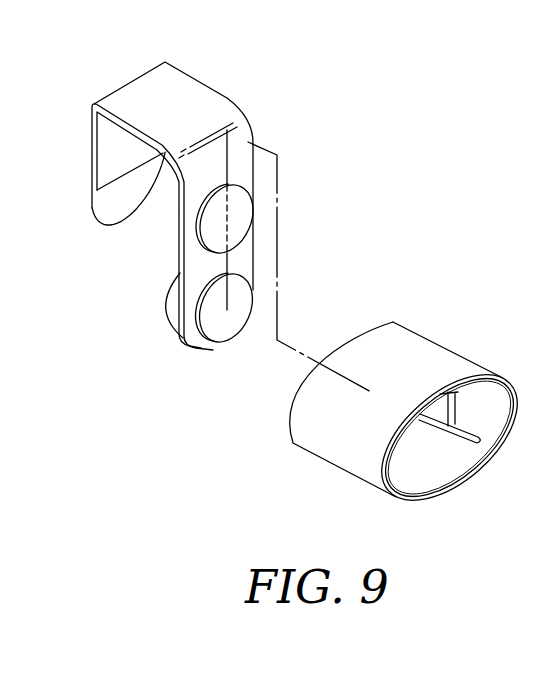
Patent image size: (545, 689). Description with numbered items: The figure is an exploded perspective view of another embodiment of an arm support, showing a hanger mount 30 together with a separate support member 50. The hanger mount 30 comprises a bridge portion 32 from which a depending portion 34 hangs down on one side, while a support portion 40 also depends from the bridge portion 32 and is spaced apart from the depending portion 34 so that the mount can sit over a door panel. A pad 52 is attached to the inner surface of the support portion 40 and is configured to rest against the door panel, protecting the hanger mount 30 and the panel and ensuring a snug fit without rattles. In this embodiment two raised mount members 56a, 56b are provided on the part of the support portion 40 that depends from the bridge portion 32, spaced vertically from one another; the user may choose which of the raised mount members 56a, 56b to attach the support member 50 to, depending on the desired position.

The hanger mount 30 is at (146, 188).
The bridge portion 32 is at (183, 90).
The depending portion 34 is at (92, 140).
The support portion 40 is at (190, 200).
The support member 50 is at (443, 325).
The pad 52 is at (172, 303).
The raised mount member 56a is at (212, 230).
The raised mount member 56b is at (215, 332).